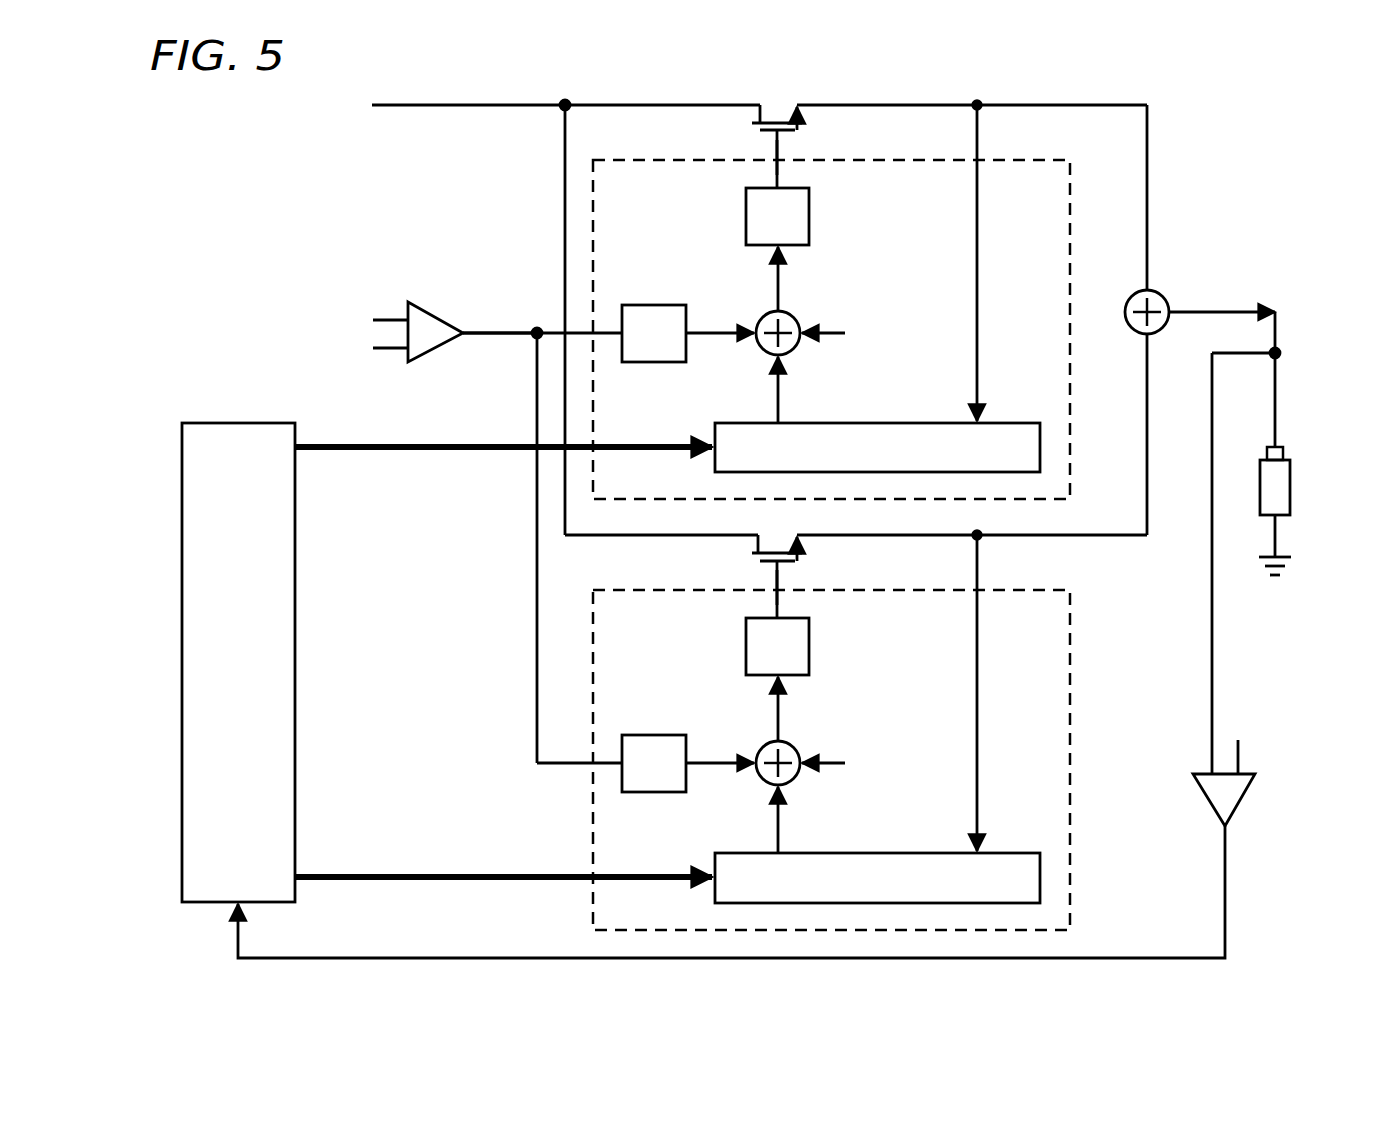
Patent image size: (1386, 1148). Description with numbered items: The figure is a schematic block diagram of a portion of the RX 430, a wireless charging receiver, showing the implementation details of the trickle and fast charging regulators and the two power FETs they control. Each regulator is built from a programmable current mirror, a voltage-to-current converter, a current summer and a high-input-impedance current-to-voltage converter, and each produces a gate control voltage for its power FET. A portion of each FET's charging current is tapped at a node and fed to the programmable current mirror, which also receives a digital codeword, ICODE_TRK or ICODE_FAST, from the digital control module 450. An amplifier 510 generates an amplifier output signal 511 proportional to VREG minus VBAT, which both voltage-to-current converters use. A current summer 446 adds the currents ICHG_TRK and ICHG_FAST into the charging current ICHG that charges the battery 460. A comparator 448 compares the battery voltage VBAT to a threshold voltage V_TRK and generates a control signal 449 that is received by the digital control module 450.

The RX 430 is at (232, 117).
The current summer 446 is at (1166, 296).
The comparator 448 is at (1246, 792).
The control signal 449 is at (1226, 889).
The digital control module 450 is at (240, 422).
The battery 460 is at (1290, 491).
The amplifier 510 is at (439, 305).
The amplifier output signal 511 is at (497, 331).